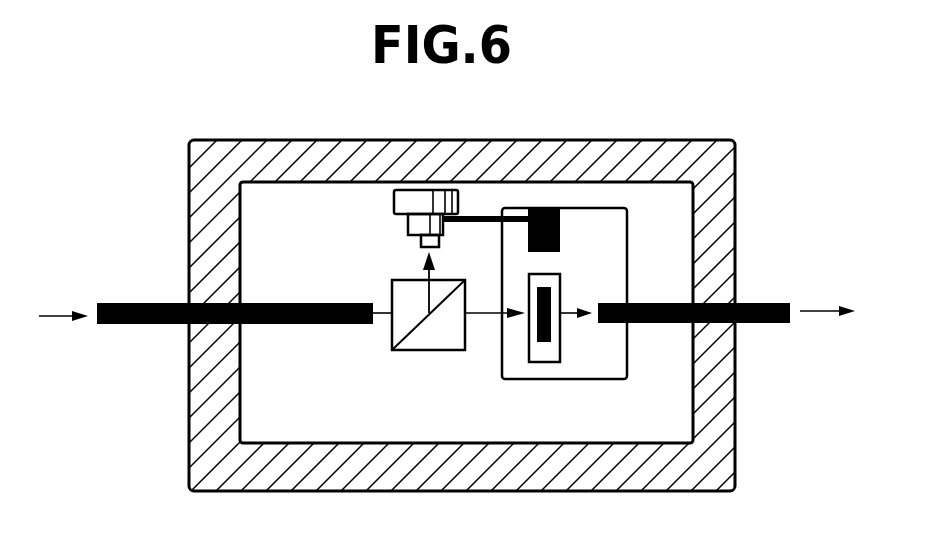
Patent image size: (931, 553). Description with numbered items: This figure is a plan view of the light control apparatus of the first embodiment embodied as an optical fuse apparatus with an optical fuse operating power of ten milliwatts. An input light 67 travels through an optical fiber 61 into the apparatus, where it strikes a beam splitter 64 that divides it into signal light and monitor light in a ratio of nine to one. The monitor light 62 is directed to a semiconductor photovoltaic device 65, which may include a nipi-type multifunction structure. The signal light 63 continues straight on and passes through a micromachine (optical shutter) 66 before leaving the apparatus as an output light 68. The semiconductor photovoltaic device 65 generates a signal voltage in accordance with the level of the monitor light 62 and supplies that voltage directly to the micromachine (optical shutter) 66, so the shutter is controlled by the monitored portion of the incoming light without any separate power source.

The optical fiber 61 is at (157, 303).
The monitor light 62 is at (423, 272).
The signal light 63 is at (487, 313).
The beam splitter 64 is at (422, 345).
The semiconductor photovoltaic device 65 is at (436, 193).
The micromachine (optical shutter) 66 is at (608, 238).
The input light 67 is at (62, 316).
The output light 68 is at (818, 311).